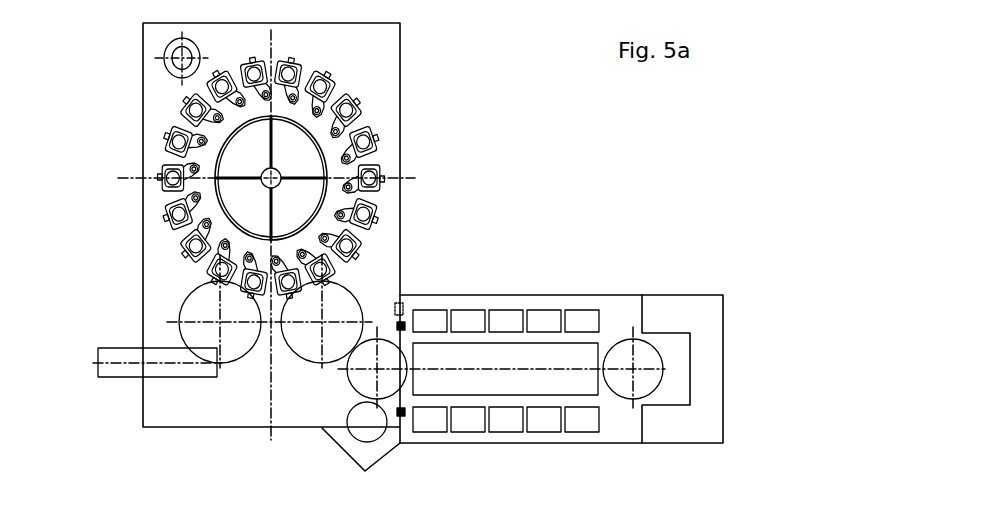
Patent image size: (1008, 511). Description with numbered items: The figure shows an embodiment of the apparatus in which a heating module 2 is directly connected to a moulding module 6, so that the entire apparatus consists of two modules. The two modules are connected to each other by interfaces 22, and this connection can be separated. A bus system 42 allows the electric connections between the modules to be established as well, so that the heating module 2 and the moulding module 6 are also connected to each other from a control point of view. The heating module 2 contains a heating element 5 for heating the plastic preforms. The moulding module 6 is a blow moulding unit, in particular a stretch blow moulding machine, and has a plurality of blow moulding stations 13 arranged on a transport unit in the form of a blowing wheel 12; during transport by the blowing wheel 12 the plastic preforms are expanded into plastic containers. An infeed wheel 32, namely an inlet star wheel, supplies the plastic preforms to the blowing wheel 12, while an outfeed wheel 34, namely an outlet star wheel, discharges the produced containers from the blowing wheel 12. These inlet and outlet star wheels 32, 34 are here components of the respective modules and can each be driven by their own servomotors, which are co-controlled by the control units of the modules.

The heating module 2 is at (513, 278).
The heating element 5 is at (583, 317).
The moulding module 6 is at (388, 99).
The blowing wheel 12 is at (298, 208).
The blow moulding stations 13 is at (375, 140).
The interfaces 22 is at (403, 328).
The infeed wheel 32 is at (345, 296).
The outfeed wheel 34 is at (205, 310).
The bus system 42 is at (405, 312).